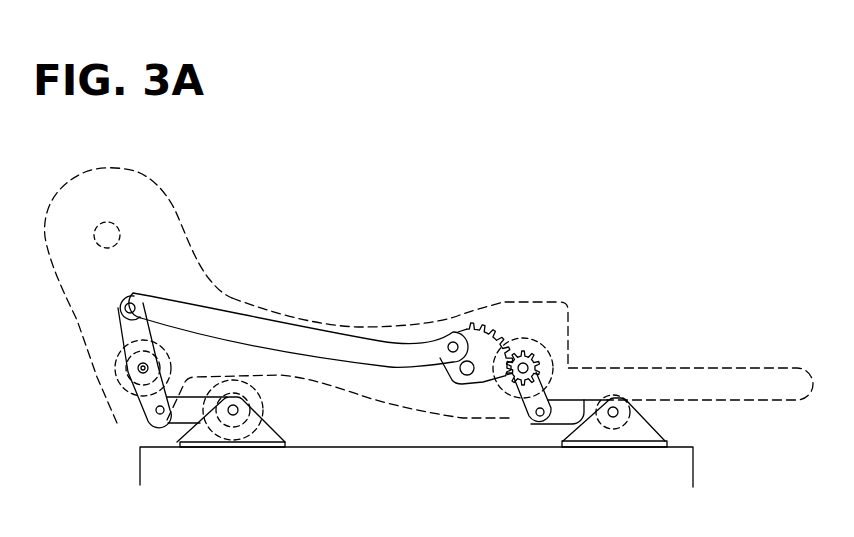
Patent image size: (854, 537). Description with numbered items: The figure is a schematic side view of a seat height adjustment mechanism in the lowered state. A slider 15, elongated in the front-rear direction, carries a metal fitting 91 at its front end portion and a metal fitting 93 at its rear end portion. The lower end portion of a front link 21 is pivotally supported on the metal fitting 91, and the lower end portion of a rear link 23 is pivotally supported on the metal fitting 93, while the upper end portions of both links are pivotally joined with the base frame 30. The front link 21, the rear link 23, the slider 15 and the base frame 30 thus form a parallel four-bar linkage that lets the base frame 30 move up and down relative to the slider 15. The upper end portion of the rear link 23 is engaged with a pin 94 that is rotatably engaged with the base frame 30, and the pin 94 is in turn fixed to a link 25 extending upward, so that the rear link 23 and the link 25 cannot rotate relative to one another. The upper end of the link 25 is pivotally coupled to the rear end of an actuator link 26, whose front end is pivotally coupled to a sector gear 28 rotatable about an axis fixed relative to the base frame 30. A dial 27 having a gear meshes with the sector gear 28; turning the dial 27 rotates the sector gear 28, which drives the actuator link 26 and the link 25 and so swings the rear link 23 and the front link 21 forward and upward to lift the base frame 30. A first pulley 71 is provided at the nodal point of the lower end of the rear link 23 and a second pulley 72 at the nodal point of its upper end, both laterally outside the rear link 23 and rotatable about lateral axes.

The slider 15 is at (683, 447).
The front link 21 is at (582, 412).
The rear link 23 is at (167, 423).
The link 25 is at (123, 328).
The actuator link 26 is at (283, 333).
The dial 27 is at (528, 340).
The sector gear 28 is at (478, 396).
The base frame 30 is at (233, 292).
The first pulley 71 is at (190, 382).
The second pulley 72 is at (102, 388).
The metal fitting 91 is at (628, 433).
The metal fitting 93 is at (267, 437).
The pin 94 is at (137, 387).